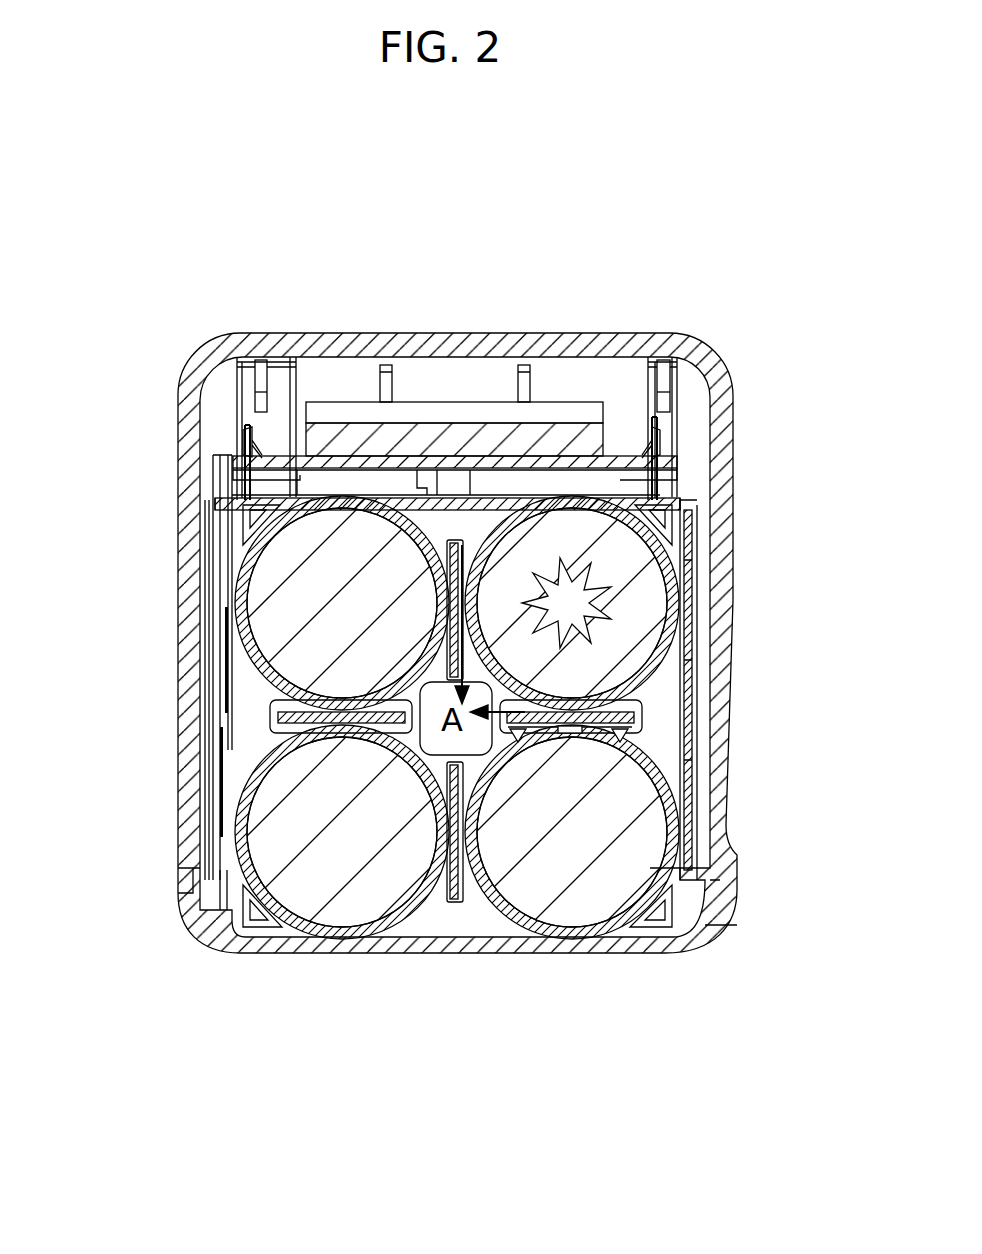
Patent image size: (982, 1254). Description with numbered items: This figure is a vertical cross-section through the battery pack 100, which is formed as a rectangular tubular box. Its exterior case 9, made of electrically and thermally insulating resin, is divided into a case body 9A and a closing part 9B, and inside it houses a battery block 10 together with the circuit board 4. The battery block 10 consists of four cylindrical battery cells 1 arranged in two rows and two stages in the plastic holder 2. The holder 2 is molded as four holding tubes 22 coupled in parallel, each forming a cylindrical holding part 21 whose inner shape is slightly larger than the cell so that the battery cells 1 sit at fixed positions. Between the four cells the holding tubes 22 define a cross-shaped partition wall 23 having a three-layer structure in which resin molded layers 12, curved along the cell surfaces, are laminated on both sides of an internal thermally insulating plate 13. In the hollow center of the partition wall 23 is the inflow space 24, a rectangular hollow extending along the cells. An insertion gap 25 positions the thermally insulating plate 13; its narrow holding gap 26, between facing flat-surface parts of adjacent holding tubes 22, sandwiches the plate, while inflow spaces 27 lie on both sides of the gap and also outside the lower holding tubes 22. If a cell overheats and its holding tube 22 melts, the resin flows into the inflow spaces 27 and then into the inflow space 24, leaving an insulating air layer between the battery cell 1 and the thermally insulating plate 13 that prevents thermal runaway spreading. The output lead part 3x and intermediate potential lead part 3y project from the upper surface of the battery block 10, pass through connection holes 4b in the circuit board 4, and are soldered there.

The battery pack 100 is at (690, 232).
The exterior case 9 is at (75, 598).
The case body 9A is at (181, 560).
The closing part 9B is at (195, 932).
The holder 2 is at (518, 265).
The holding tube 22 is at (250, 627).
The partition wall 23 is at (418, 633).
The battery cell 1 is at (563, 573).
The battery block 10 is at (560, 480).
The circuit board 4 is at (530, 455).
The connection hole 4b is at (247, 430).
The intermediate potential lead part 3y is at (266, 360).
The output lead part 3x is at (640, 407).
The holding part 21 is at (245, 512).
The resin molded layer 12 is at (547, 702).
The thermally insulating plate 13 is at (563, 702).
The inflow space 24 is at (423, 738).
The insertion gap 25 is at (675, 1028).
The holding gap 26 is at (565, 735).
The inflow space 27 is at (518, 742).